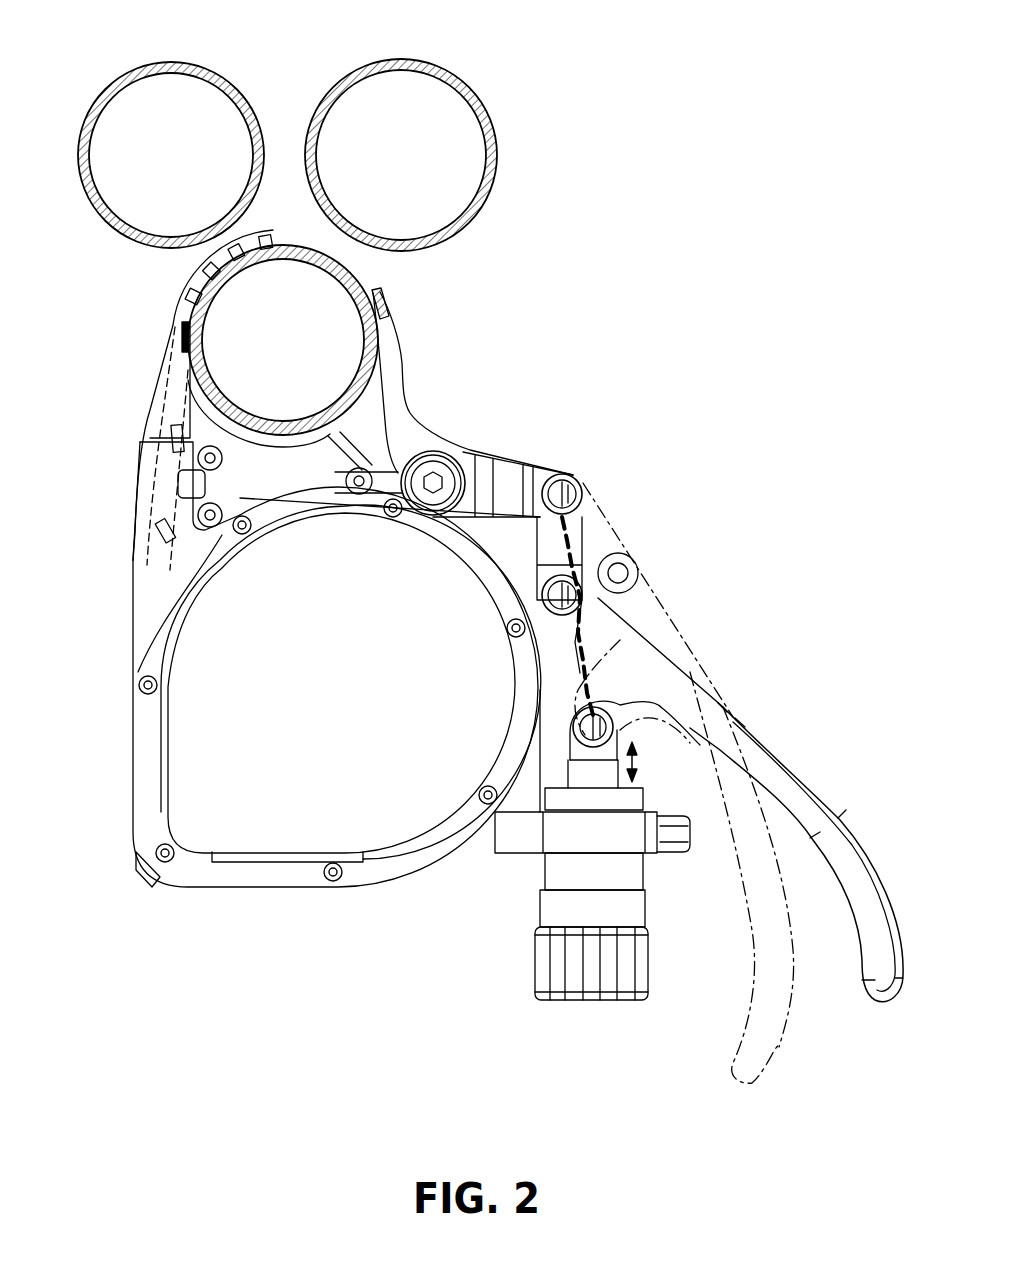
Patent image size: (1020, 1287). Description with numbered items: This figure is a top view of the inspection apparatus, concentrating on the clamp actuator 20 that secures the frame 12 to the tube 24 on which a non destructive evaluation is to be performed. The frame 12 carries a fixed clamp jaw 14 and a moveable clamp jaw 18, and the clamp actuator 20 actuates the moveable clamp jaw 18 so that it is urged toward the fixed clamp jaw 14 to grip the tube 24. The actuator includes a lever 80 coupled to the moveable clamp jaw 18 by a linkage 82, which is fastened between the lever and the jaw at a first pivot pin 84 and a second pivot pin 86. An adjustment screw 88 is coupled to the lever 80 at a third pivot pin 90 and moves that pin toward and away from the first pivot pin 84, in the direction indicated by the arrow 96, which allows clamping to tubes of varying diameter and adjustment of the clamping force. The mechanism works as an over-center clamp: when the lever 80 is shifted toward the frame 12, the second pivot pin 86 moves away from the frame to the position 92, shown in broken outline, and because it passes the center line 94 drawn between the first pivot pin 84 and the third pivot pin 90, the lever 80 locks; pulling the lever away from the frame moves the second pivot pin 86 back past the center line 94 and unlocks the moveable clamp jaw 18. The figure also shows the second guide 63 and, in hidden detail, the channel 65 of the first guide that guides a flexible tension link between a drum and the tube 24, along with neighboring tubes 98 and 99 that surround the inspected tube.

The frame 12 is at (388, 876).
The fixed clamp jaw 14 is at (172, 355).
The moveable clamp jaw 18 is at (392, 318).
The clamp actuator 20 is at (708, 970).
The tube 24 is at (304, 246).
The second guide 63 is at (143, 406).
The channel 65 is at (158, 484).
The lever 80 is at (848, 842).
The linkage 82 is at (545, 548).
The first pivot pin 84 is at (570, 480).
The second pivot pin 86 is at (565, 596).
The adjustment screw 88 is at (573, 990).
The third pivot pin 90 is at (580, 727).
The position 92 is at (622, 572).
The center line 94 is at (583, 640).
The arrow 96 is at (637, 760).
The tube 98 is at (168, 62).
The tube 99 is at (394, 62).